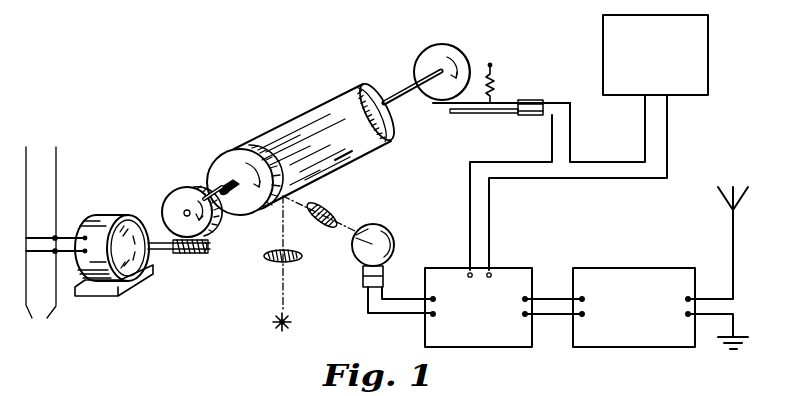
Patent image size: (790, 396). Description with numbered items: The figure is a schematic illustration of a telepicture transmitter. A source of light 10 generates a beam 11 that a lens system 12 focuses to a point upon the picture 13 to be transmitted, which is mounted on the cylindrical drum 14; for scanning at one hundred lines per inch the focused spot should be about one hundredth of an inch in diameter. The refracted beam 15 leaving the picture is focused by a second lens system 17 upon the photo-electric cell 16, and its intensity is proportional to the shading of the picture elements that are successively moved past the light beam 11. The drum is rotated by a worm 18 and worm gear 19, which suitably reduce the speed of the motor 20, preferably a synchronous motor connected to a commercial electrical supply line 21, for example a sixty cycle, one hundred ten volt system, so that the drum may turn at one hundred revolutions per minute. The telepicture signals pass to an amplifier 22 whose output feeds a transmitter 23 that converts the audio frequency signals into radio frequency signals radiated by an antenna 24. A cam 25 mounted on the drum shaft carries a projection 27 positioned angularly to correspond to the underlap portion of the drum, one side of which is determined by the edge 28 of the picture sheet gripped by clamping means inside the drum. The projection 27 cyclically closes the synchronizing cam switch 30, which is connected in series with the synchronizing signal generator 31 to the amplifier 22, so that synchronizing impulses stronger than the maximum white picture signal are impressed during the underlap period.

The source of light 10 is at (292, 318).
The beam 11 is at (275, 285).
The lens system 12 is at (301, 259).
The picture 13 is at (318, 106).
The cylindrical drum 14 is at (218, 162).
The refracted beam 15 is at (301, 204).
The photo-electric cell 16 is at (386, 231).
The lens system 17 is at (335, 208).
The worm 18 is at (197, 254).
The worm gear 19 is at (182, 188).
The motor 20 is at (117, 204).
The commercial electrical supply line 21 is at (41, 243).
The amplifier 22 is at (510, 272).
The transmitter 23 is at (643, 272).
The antenna 24 is at (736, 228).
The cam 25 is at (420, 72).
The projection 27 is at (438, 101).
The edge 28 is at (355, 154).
The synchronizing cam switch 30 is at (533, 100).
The synchronizing signal generator 31 is at (695, 51).